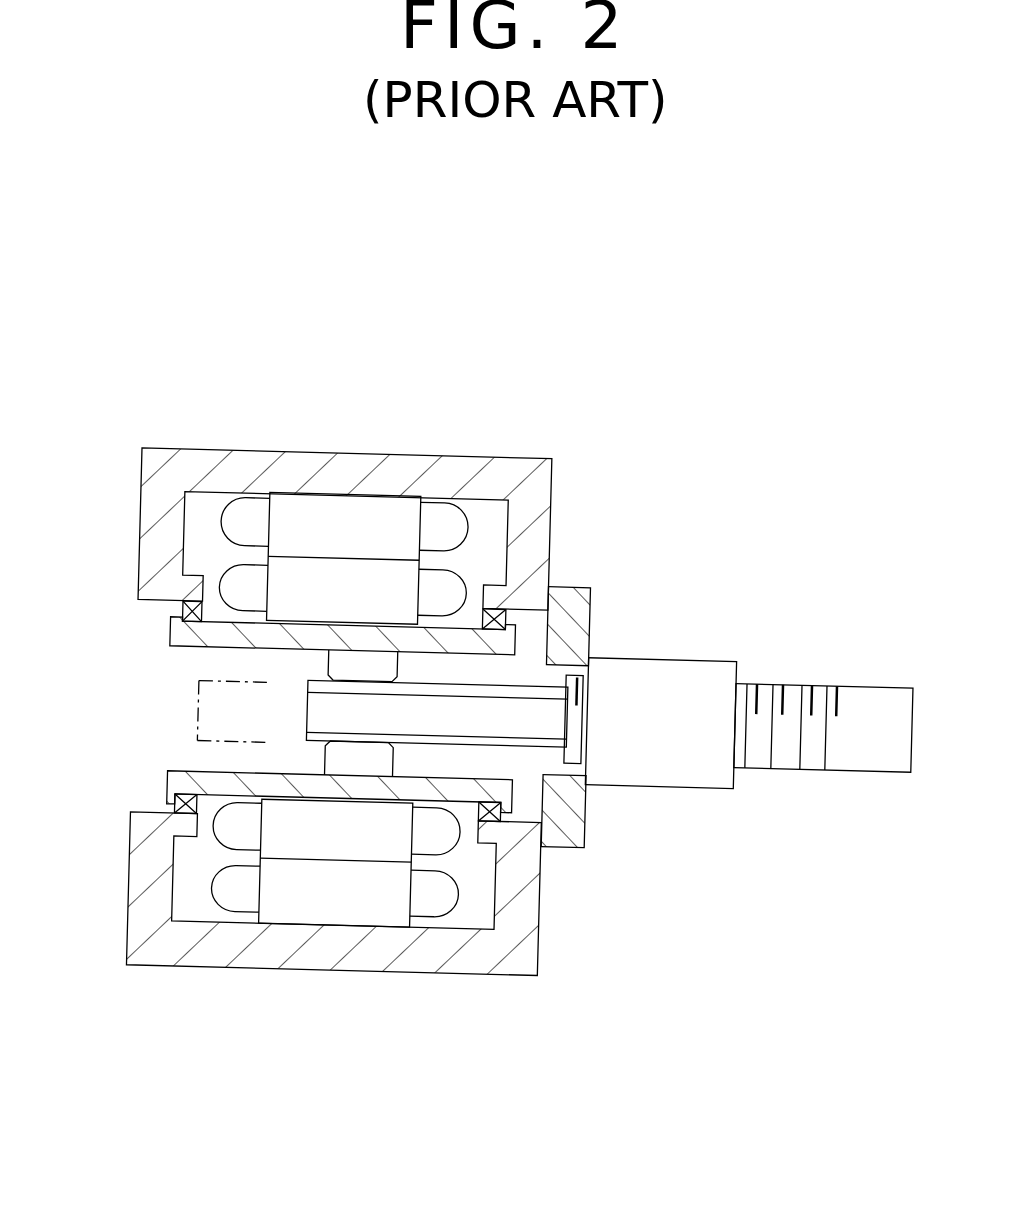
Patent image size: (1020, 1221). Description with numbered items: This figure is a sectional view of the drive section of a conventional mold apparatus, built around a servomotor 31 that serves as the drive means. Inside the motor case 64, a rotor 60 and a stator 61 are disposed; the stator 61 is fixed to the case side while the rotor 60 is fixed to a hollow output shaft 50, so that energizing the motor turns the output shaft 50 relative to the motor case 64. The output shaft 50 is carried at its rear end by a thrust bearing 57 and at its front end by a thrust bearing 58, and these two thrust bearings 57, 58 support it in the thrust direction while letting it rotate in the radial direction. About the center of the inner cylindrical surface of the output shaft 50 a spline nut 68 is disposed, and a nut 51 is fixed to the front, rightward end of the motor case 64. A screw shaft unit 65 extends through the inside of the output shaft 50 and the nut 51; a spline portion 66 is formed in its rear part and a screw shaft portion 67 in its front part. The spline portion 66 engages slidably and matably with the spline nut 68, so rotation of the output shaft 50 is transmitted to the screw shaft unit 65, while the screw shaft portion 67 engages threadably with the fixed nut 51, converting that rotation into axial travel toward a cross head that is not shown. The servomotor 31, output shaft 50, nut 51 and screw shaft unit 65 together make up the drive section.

The servomotor 31 is at (329, 893).
The hollow output shaft 50 is at (228, 768).
The nut 51 is at (700, 744).
The thrust bearing 57 is at (190, 814).
The thrust bearing 58 is at (495, 814).
The rotor 60 is at (304, 843).
The stator 61 is at (395, 894).
The motor case 64 is at (498, 459).
The screw shaft unit 65 is at (851, 544).
The spline portion 66 is at (558, 671).
The screw shaft portion 67 is at (806, 665).
The spline nut 68 is at (360, 652).